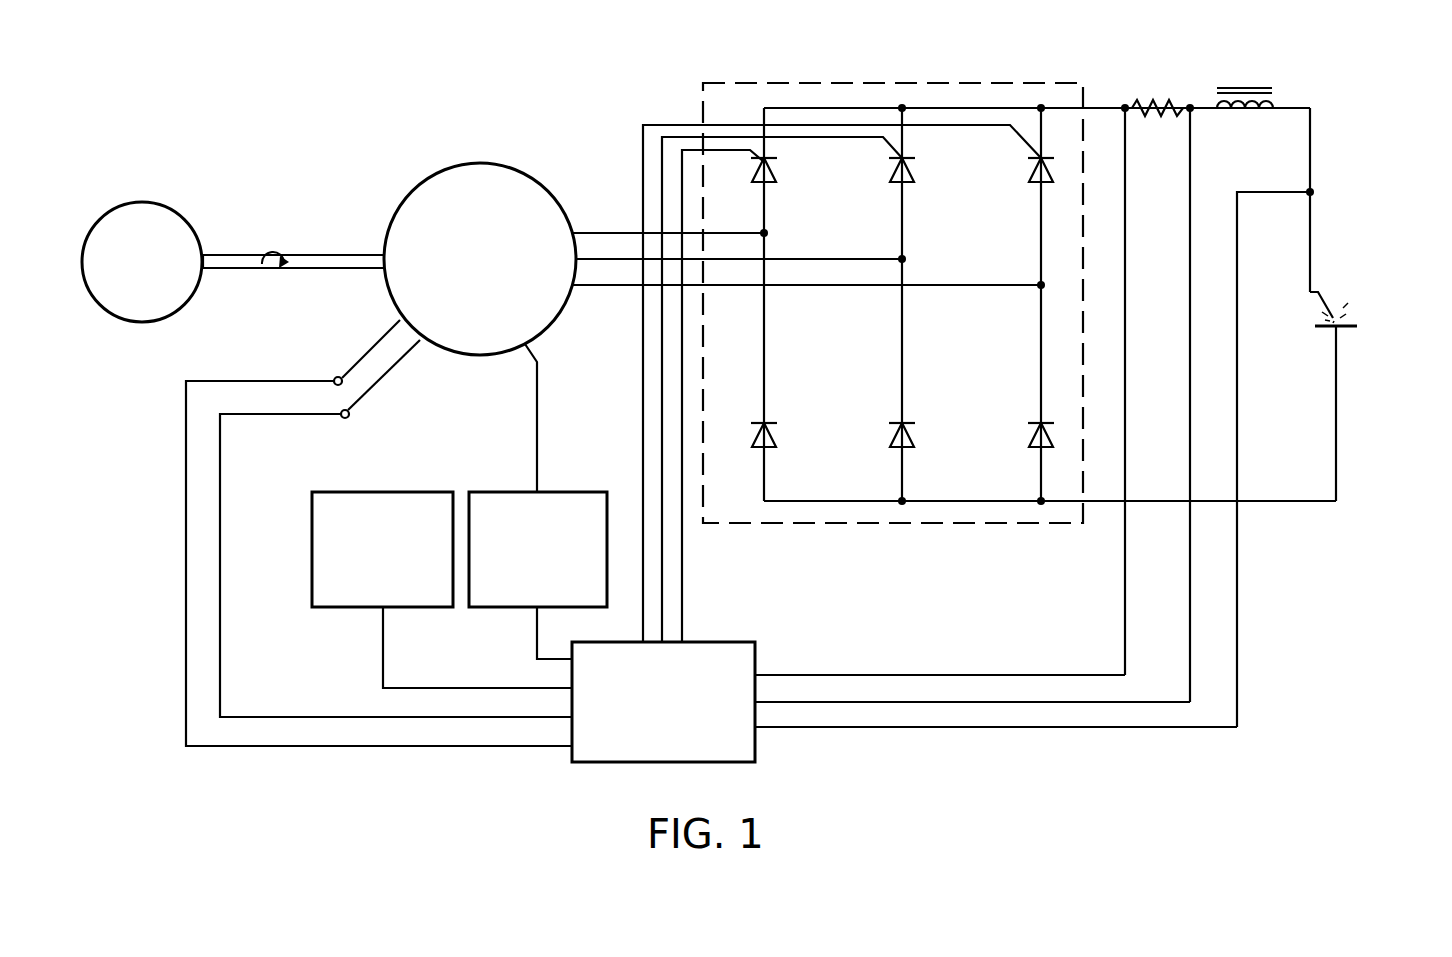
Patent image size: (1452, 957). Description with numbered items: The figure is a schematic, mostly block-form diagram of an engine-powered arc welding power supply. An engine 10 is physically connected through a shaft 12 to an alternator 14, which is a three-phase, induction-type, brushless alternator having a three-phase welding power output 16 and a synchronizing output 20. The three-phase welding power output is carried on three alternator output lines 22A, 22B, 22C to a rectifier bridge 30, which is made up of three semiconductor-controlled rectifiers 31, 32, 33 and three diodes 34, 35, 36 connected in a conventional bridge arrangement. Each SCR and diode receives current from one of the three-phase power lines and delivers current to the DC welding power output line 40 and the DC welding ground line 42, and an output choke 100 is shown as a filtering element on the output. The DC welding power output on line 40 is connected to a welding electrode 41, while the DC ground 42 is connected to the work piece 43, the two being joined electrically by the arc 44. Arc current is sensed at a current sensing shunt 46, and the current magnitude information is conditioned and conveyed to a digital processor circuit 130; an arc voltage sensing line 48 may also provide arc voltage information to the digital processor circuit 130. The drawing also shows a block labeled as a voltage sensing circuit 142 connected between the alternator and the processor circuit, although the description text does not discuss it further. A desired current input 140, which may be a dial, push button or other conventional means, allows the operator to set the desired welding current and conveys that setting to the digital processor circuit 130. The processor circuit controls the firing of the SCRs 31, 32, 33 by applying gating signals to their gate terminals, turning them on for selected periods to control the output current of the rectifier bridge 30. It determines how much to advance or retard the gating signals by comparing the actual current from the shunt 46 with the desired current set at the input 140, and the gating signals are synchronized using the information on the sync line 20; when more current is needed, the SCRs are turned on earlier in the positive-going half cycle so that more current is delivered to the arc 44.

The engine 10 is at (147, 210).
The shaft 12 is at (225, 258).
The alternator 14 is at (442, 183).
The three-phase welding power output 16 is at (796, 247).
The synchronizing output 20 is at (172, 462).
The alternator output line 22A is at (618, 232).
The alternator output line 22B is at (602, 260).
The alternator output line 22C is at (628, 287).
The rectifier bridge 30 is at (989, 326).
The semiconductor-controlled rectifier 31 is at (775, 175).
The semiconductor-controlled rectifier 32 is at (912, 175).
The semiconductor-controlled rectifier 33 is at (1030, 183).
The diode 34 is at (775, 432).
The diode 35 is at (913, 433).
The diode 36 is at (1030, 447).
The DC welding power output line 40 is at (1100, 107).
The welding electrode 41 is at (1325, 300).
The DC welding ground line 42 is at (1108, 501).
The work piece 43 is at (1345, 328).
The arc 44 is at (1345, 313).
The current sensing shunt 46 is at (1158, 107).
The arc voltage sensing line 48 is at (1240, 603).
The output choke 100 is at (1240, 86).
The digital processor circuit 130 is at (727, 645).
The desired current input 140 is at (410, 492).
The voltage sensing circuit 142 is at (556, 484).